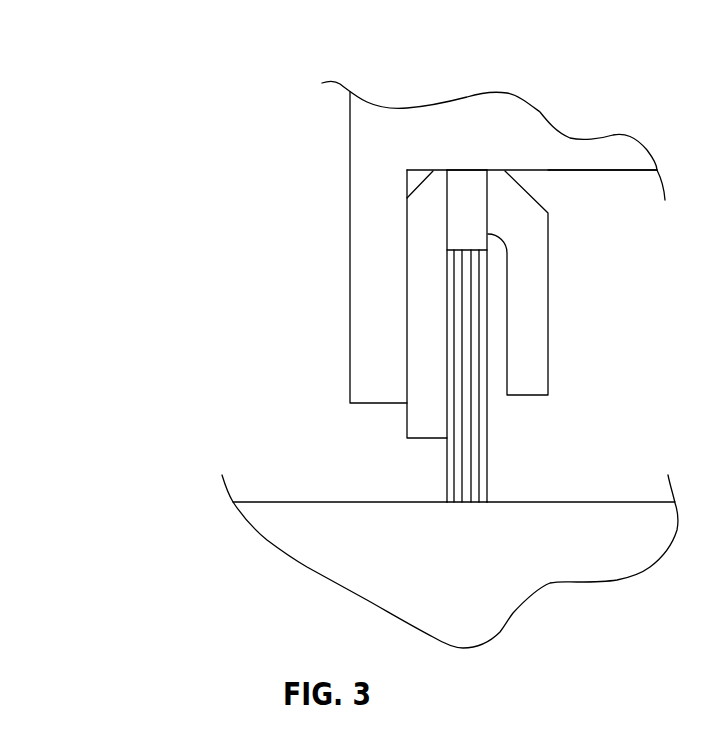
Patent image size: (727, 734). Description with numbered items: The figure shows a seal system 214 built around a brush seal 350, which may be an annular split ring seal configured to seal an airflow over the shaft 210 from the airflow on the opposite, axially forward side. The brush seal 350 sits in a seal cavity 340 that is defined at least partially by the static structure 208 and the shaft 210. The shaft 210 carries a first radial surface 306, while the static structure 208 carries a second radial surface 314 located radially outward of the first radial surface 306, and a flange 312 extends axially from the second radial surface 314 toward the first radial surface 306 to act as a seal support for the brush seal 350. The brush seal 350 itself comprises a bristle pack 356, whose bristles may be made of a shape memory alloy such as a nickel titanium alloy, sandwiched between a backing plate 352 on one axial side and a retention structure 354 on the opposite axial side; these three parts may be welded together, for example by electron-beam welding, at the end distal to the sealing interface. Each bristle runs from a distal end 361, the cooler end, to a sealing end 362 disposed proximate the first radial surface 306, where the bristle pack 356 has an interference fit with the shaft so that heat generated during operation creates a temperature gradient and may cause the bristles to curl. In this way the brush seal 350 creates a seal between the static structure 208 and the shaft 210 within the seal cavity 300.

The seal system 214 is at (88, 95).
The static structure 208 is at (418, 156).
The flange 312 is at (388, 302).
The second radial surface 314 is at (620, 170).
The backing plate 352 is at (443, 316).
The retention structure 354 is at (538, 291).
The bristle pack 356 is at (528, 424).
The distal end 361 is at (463, 170).
The sealing end 362 is at (472, 501).
The brush seal 350 is at (597, 283).
The seal cavity 340 is at (594, 407).
The first radial surface 306 is at (572, 502).
The seal cavity 300 is at (400, 502).
The shaft 210 is at (481, 577).